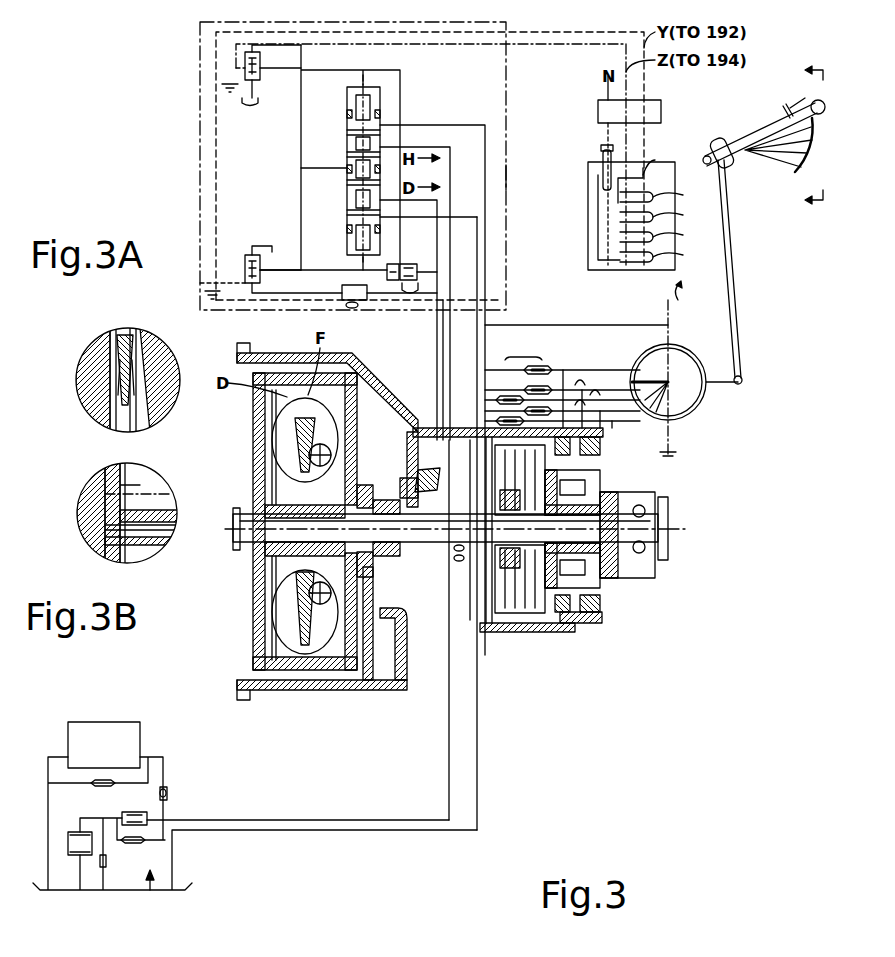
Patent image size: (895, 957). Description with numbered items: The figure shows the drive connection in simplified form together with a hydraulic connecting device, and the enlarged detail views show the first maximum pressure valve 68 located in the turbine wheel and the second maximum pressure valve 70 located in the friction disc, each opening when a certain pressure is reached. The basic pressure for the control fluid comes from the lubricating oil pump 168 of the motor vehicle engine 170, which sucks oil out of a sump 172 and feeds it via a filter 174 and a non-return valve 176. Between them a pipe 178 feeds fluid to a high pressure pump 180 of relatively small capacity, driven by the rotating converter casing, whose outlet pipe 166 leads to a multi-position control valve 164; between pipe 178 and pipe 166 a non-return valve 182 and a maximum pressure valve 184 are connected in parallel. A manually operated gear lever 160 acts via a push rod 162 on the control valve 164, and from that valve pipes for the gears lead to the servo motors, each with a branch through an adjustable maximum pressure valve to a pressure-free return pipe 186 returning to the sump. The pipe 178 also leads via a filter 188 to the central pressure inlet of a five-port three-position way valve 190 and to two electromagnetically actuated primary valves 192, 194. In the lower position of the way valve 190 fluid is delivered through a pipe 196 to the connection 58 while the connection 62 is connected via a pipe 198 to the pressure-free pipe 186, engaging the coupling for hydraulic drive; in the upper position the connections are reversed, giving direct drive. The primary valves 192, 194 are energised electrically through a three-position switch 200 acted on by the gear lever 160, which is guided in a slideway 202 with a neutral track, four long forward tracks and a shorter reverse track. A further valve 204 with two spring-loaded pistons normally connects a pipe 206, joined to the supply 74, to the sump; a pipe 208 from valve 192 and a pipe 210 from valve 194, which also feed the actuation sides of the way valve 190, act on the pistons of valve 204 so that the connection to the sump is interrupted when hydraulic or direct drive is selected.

In FIG. 3, the transverse supply bore 58 is at (420, 488).
In FIG. 3, the supply bore 62 is at (430, 500).
In FIG. 3B, the first maximum pressure valve 68 is at (109, 535).
In FIG. 3A, the second maximum pressure valve 70 is at (106, 345).
In FIG. 3, the supply 74 is at (424, 428).
In FIG. 3, the gear lever 160 is at (604, 160).
In FIG. 3, the push rod 162 is at (722, 273).
In FIG. 3, the multi-position control valve 164 is at (698, 412).
In FIG. 3, the pipe 166 is at (572, 325).
In FIG. 3, the lubricating oil pump 168 is at (78, 853).
In FIG. 3, the motor vehicle engine 170 is at (110, 735).
In FIG. 3, the sump 172 is at (151, 868).
In FIG. 3, the filter 174 is at (147, 816).
In FIG. 3, the non-return valve 176 is at (168, 797).
In FIG. 3, the pipe 178 is at (447, 770).
In FIG. 3, the high pressure pump 180 is at (393, 690).
In FIG. 3, the non-return valve 182 is at (453, 557).
In FIG. 3, the maximum pressure valve 184 is at (463, 562).
In FIG. 3, the pressure-free return pipe 186 is at (504, 256).
In FIG. 3, the filter 188 is at (360, 294).
In FIG. 3, the 5/3 way valve 190 is at (347, 120).
In FIG. 3, the upper primary valve 192 is at (258, 78).
In FIG. 3, the lower primary valve 194 is at (244, 262).
In FIG. 3, the pipe 196 is at (450, 163).
In FIG. 3, the pipe 198 is at (504, 180).
In FIG. 3, the 3-position switch 200 is at (598, 106).
In FIG. 3, the slideway 202 is at (588, 195).
In FIG. 3, the valve 204 is at (400, 265).
In FIG. 3, the pipe 206 is at (437, 362).
In FIG. 3, the pipe 208 is at (338, 70).
In FIG. 3, the pipe 210 is at (324, 270).